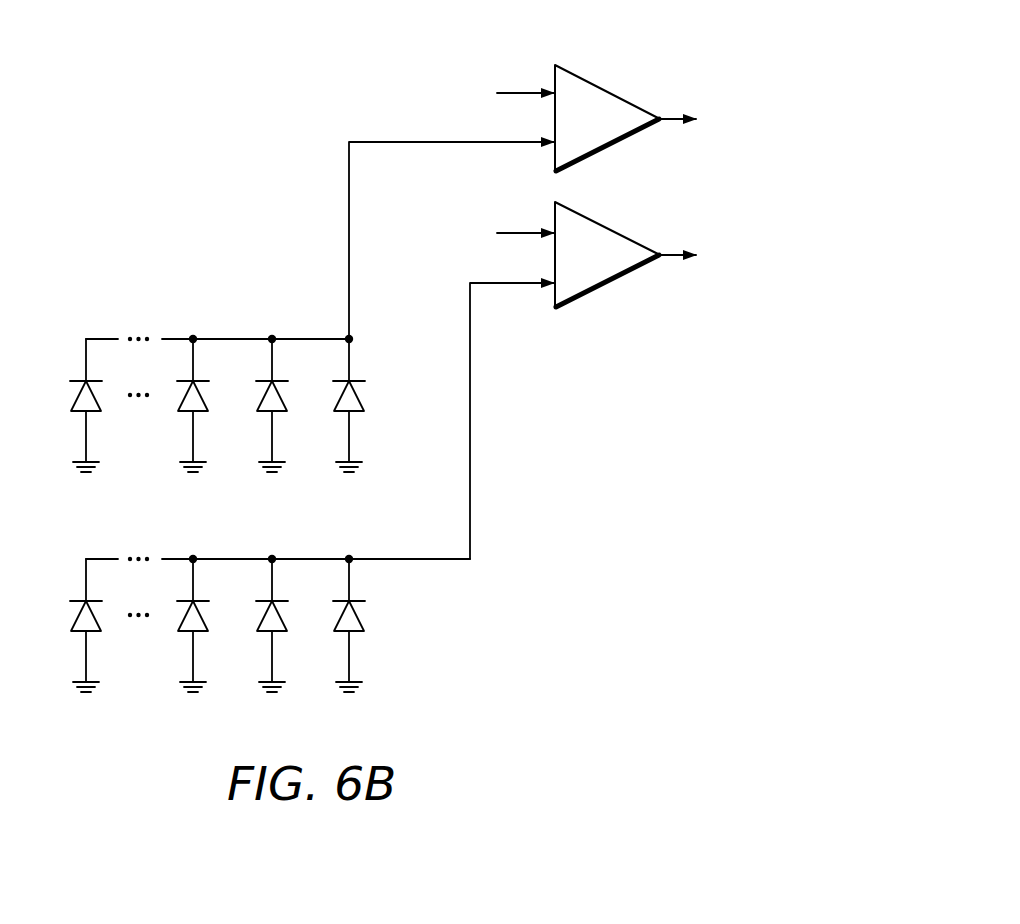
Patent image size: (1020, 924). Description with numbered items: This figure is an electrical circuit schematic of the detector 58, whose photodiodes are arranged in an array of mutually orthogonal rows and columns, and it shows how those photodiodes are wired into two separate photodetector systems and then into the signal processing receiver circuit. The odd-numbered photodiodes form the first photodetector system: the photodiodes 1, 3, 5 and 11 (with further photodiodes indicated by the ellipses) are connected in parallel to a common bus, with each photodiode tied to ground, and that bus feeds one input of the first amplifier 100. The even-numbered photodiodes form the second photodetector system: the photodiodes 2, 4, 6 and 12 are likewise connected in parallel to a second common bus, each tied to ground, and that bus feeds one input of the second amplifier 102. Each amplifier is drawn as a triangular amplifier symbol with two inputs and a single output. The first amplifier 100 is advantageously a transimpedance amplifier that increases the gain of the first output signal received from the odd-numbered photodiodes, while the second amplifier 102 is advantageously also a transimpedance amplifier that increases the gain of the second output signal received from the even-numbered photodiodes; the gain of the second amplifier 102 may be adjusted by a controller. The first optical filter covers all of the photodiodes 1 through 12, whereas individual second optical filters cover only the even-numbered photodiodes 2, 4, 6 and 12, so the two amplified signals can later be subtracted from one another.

The photodiode 1 is at (349, 437).
The photodiode 2 is at (349, 657).
The photodiode 3 is at (272, 437).
The photodiode 4 is at (272, 657).
The photodiode 5 is at (193, 437).
The photodiode 6 is at (193, 657).
The photodiode 11 is at (86, 437).
The photodiode 12 is at (86, 657).
The detector 58 is at (212, 300).
The first amplifier 100 is at (606, 90).
The second amplifier 102 is at (606, 226).